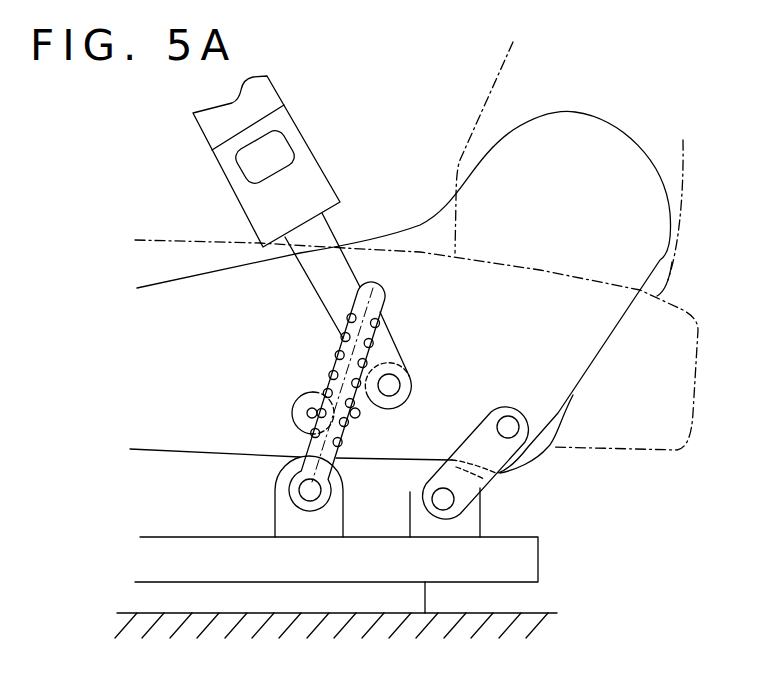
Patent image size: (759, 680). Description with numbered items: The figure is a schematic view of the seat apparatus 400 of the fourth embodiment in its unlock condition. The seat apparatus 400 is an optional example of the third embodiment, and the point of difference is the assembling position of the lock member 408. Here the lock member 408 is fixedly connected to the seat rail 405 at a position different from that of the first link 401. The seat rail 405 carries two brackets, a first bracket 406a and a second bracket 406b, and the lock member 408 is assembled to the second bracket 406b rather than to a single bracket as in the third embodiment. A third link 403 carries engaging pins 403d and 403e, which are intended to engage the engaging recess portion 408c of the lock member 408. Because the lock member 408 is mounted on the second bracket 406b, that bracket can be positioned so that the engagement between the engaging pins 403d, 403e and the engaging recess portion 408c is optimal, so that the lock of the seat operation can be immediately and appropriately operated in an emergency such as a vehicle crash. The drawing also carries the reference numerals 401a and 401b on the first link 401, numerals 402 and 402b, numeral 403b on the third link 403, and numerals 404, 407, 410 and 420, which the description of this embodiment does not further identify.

The seat apparatus 400 is at (482, 290).
The first link 401 is at (487, 480).
The link upper pin 401a is at (508, 427).
The link lower pin 401b is at (443, 499).
The operating rod 402 is at (323, 235).
The rod pivot 402b is at (391, 385).
The third link 403 is at (296, 421).
The lever pivot 403b is at (388, 360).
The engaging pin 403d is at (308, 412).
The engaging pin 403e is at (359, 416).
The floor 404 is at (380, 620).
The seat rail 405 is at (180, 547).
The first bracket 406a is at (470, 525).
The second bracket 406b is at (312, 525).
The handle 407 is at (315, 168).
The lock member 408 is at (372, 284).
The engaging recess portion 408c is at (338, 358).
The seat cushion reference line 410 is at (143, 240).
The seat back reference line 420 is at (477, 188).